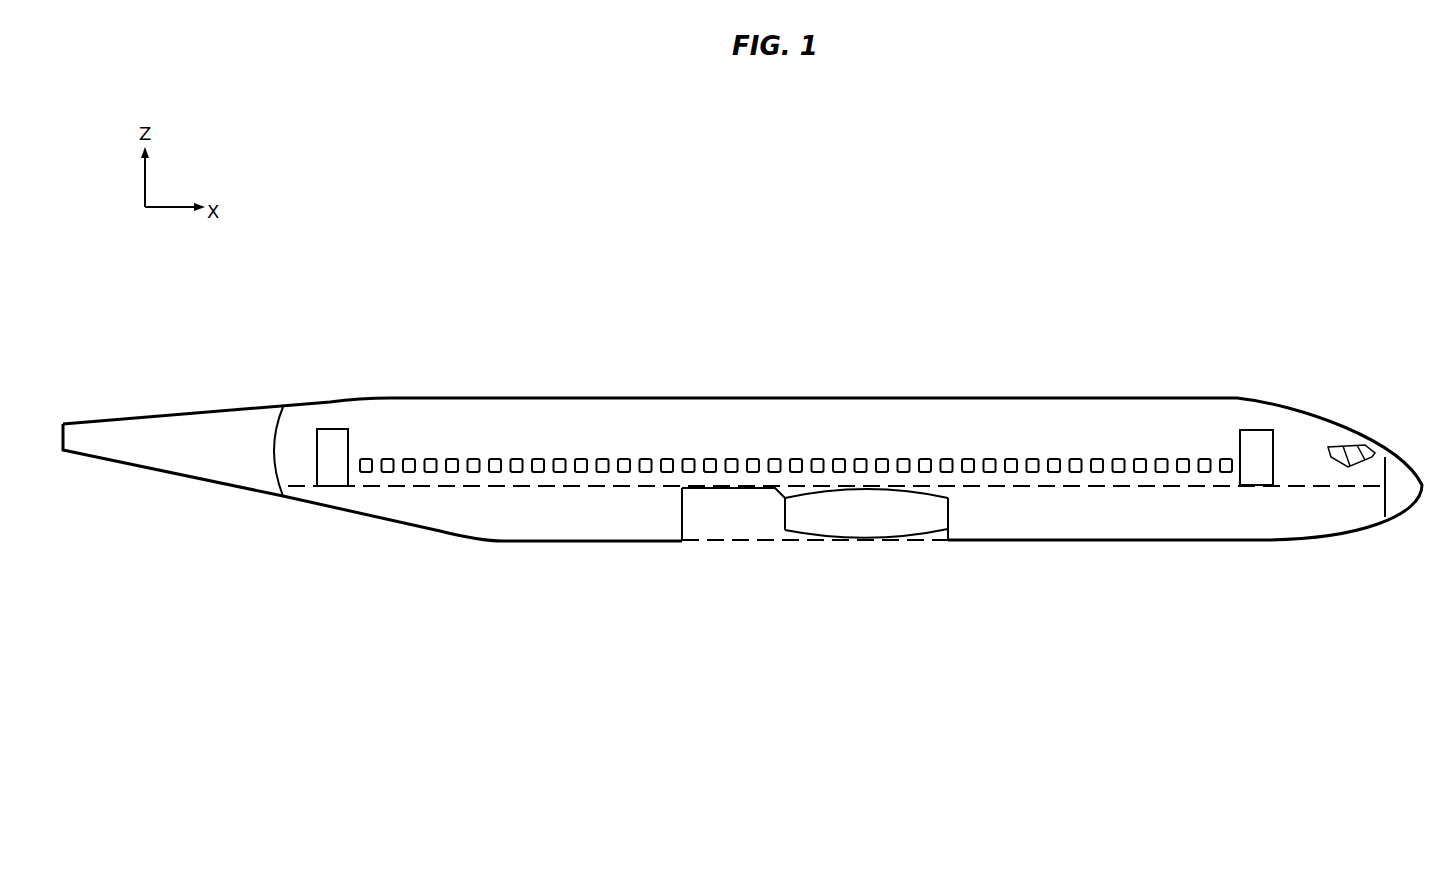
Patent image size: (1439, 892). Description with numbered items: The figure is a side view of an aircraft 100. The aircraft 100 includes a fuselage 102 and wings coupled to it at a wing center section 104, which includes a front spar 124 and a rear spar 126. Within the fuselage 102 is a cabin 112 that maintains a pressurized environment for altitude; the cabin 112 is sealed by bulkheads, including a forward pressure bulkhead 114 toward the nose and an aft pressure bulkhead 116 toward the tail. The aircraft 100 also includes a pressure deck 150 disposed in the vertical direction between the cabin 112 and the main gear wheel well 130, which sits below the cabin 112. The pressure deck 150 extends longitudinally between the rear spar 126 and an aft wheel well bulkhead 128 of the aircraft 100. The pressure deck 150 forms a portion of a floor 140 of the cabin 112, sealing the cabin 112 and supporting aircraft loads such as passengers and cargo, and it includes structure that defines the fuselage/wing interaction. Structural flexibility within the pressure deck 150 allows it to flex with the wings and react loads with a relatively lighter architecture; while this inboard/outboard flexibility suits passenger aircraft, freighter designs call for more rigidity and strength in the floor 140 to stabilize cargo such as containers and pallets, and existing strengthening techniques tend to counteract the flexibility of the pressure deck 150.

The aircraft 100 is at (742, 376).
The fuselage 102 is at (1131, 389).
The wing center section 104 is at (870, 461).
The cabin 112 is at (560, 417).
The forward pressure bulkhead 114 is at (1394, 469).
The aft pressure bulkhead 116 is at (262, 419).
The front spar 124 is at (962, 519).
The rear spar 126 is at (795, 515).
The aft wheel well bulkhead 128 is at (672, 518).
The main gear wheel well 130 is at (796, 499).
The floor 140 is at (393, 497).
The pressure deck 150 is at (742, 478).